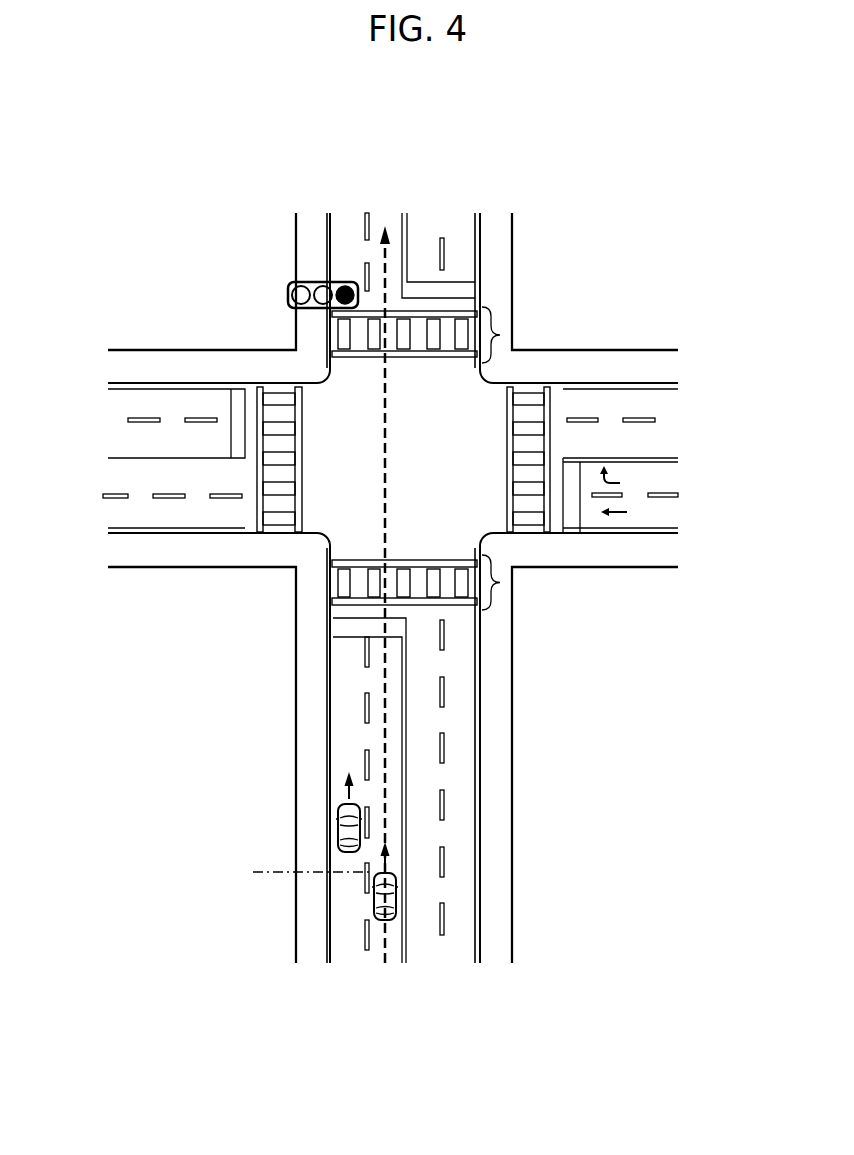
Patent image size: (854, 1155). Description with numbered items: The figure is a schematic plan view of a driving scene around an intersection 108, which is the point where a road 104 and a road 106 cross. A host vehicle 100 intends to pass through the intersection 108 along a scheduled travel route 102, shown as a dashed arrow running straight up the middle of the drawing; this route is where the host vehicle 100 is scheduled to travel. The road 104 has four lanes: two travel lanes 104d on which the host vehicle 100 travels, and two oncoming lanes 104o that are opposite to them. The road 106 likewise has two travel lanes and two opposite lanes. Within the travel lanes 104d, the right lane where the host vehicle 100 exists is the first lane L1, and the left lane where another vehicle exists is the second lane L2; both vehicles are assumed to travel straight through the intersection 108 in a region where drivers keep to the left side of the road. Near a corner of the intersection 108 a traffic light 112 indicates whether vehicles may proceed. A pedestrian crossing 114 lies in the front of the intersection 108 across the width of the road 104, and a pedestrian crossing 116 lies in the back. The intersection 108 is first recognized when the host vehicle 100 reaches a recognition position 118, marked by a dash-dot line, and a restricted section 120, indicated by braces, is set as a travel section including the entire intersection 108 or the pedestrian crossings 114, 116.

The host vehicle 100 is at (339, 808).
The scheduled travel route 102 is at (388, 439).
The road 104 is at (401, 584).
The travel lanes 104d is at (402, 160).
The oncoming lanes 104o is at (470, 160).
The road 106 is at (88, 390).
The intersection 108 is at (532, 328).
The traffic light 112 is at (288, 292).
The pedestrian crossing 114 is at (350, 581).
The pedestrian crossing 116 is at (345, 331).
The recognition position 118 is at (275, 875).
The restricted section 120 is at (502, 332).
The first lane L1 is at (387, 217).
The second lane L2 is at (357, 227).